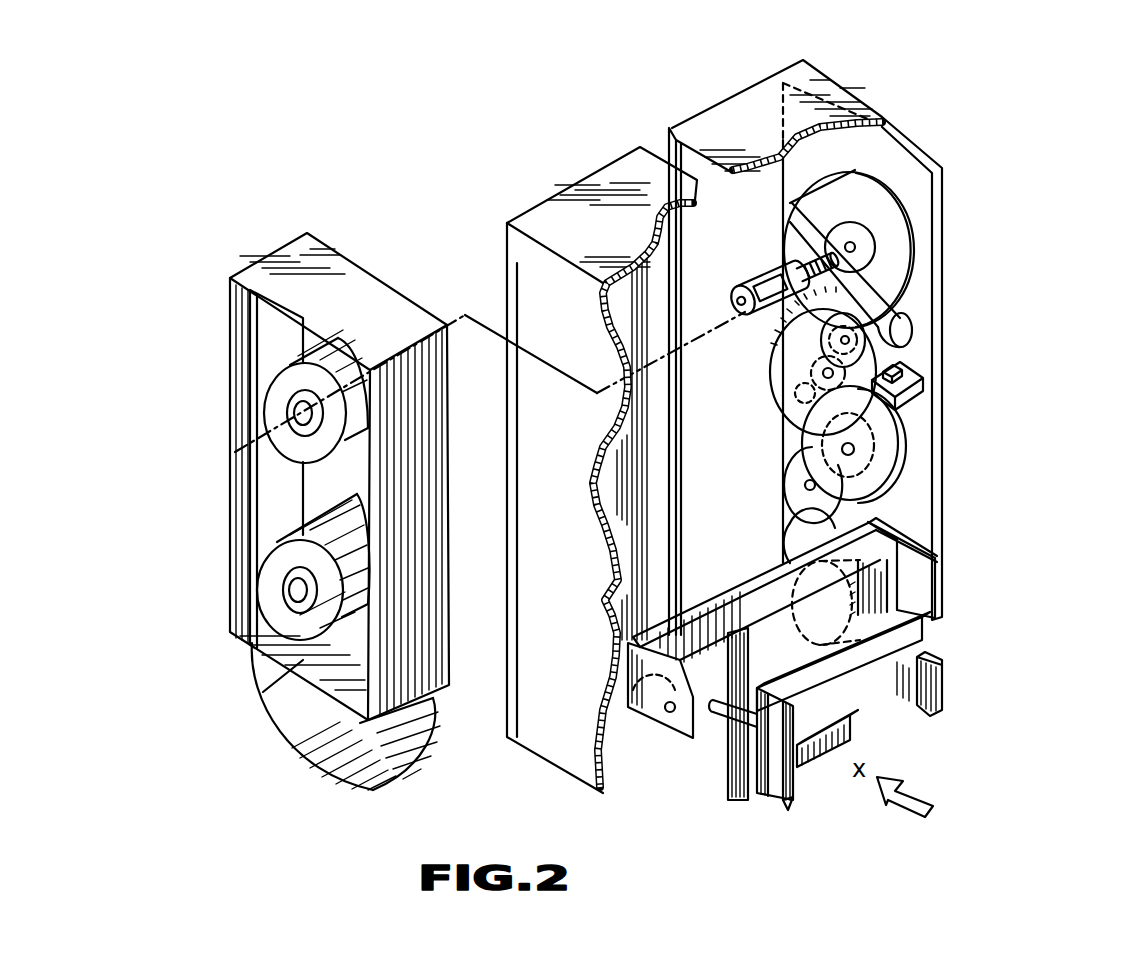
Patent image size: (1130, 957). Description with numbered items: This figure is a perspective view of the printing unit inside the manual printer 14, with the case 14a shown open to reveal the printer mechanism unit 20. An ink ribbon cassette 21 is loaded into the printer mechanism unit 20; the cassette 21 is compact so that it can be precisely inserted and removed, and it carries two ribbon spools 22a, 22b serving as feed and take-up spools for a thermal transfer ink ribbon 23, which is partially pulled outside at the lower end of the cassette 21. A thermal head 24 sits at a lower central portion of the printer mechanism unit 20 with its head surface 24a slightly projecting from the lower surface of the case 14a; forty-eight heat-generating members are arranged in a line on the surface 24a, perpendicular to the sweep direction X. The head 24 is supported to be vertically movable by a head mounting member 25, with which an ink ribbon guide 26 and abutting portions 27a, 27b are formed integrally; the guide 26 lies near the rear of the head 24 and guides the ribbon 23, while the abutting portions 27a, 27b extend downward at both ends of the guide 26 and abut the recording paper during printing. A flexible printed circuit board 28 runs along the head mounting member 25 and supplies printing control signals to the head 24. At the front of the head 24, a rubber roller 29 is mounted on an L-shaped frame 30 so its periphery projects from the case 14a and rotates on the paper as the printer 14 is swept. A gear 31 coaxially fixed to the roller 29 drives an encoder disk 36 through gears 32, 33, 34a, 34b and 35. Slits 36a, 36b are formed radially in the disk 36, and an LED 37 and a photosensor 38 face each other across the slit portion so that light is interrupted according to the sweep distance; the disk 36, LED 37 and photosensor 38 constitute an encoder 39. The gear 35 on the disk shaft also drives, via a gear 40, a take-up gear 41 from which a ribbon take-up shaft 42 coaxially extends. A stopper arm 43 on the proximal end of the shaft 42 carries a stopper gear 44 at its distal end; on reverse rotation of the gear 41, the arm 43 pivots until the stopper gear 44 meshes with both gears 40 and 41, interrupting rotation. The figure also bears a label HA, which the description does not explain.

The printer 14 is at (585, 128).
The case 14a is at (690, 118).
The printer mechanism unit 20 is at (748, 190).
The ink ribbon cassette 21 is at (323, 256).
The ribbon spool 22a is at (285, 582).
The ribbon spool 22b is at (292, 420).
The thermal transfer ink ribbon 23 is at (322, 764).
The thermal head 24 is at (740, 763).
The head surface 24a is at (826, 763).
The head mounting member 25 is at (893, 586).
The ink ribbon guide 26 is at (907, 645).
The abutting portion 27a is at (782, 800).
The abutting portion 27b is at (918, 708).
The flexible printed circuit board 28 is at (890, 528).
The rubber roller 29 is at (663, 733).
The L-shaped frame 30 is at (628, 710).
The gear 31 is at (880, 598).
The gear 32 is at (793, 534).
The gear 33 is at (797, 483).
The gear 34a is at (880, 450).
The gear 34b is at (909, 444).
The gear 35 is at (790, 390).
The encoder disk 36 is at (793, 368).
The slit 36a is at (778, 351).
The slit 36b is at (780, 372).
The LED 37 is at (880, 397).
The photosensor 38 is at (896, 366).
The encoder 39 is at (966, 368).
The gear 40 is at (872, 330).
The take-up gear 41 is at (900, 247).
The ribbon take-up shaft 42 is at (750, 290).
The stopper arm 43 is at (880, 288).
The stopper gear 44 is at (912, 335).
The head assembly direction HA is at (694, 798).